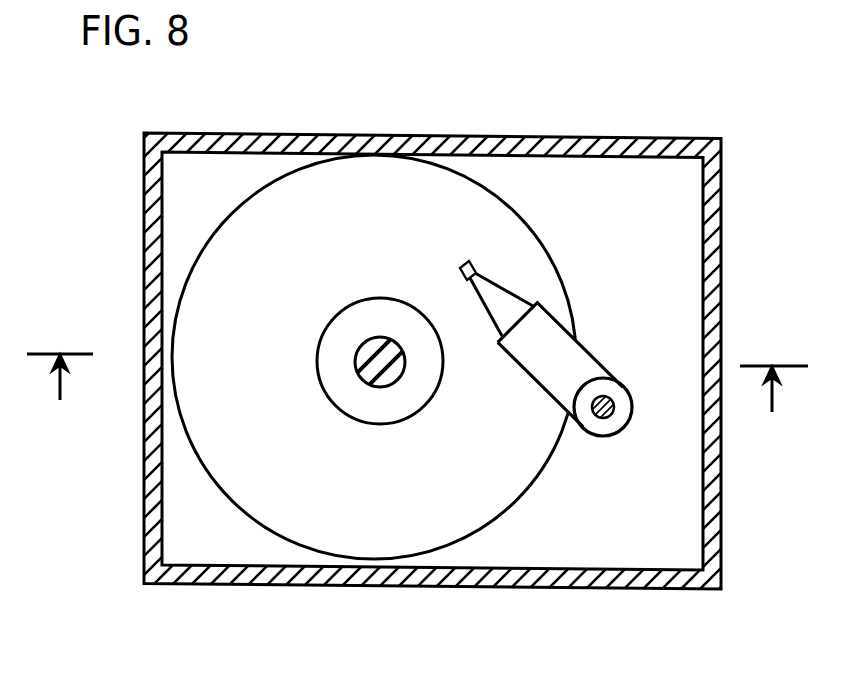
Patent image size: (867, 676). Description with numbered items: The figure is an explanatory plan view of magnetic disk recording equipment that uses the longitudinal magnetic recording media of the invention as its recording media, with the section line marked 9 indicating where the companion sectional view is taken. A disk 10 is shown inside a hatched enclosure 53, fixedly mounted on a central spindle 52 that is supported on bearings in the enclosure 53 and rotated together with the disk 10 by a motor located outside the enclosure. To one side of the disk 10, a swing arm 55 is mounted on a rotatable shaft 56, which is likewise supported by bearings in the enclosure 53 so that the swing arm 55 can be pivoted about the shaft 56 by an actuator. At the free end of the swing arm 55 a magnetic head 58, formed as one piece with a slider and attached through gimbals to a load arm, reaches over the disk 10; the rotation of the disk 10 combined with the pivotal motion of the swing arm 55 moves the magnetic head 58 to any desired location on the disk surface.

The disk 10 is at (417, 515).
The spindle 52 is at (370, 338).
The enclosure 53 is at (578, 577).
The swing arm 55 is at (560, 357).
The rotatable shaft 56 is at (609, 417).
The magnetic head 58 is at (466, 266).
The section line 9- 9 is at (417, 411).